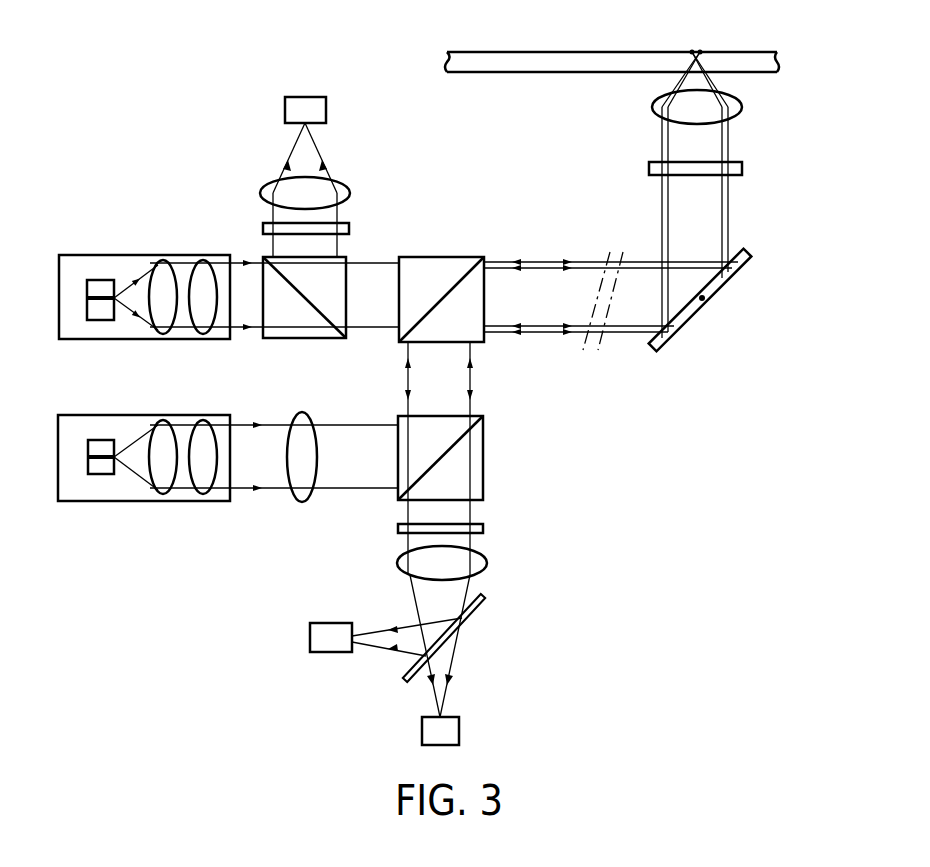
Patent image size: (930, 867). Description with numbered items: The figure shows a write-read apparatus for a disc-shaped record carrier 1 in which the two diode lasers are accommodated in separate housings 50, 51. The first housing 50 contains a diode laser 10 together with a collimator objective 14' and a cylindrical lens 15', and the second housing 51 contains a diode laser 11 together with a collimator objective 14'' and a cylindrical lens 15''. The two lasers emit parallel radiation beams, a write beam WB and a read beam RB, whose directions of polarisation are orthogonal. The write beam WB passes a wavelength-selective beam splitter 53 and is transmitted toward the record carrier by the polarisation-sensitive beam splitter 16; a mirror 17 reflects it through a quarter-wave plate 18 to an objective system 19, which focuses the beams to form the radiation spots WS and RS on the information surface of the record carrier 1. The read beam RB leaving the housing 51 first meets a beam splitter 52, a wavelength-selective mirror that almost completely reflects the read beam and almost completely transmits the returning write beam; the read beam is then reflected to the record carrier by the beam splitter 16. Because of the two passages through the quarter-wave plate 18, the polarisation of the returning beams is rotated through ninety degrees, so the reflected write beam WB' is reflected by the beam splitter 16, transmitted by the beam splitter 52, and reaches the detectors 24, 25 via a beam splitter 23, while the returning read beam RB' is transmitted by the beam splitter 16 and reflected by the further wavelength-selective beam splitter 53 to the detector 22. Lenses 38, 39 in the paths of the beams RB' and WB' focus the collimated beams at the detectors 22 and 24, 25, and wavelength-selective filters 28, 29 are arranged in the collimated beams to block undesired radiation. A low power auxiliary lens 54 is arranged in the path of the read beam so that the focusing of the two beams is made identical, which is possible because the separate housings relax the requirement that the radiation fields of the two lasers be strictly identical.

The record carrier 1 is at (766, 40).
The read radiation spot RS is at (691, 50).
The write radiation spot WS is at (701, 50).
The diode laser 10 is at (98, 299).
The diode laser 11 is at (98, 458).
The collimator objective 14' is at (165, 316).
The cylindrical lens 15' is at (210, 316).
The collimator objective 14'' is at (165, 440).
The cylindrical lens 15'' is at (212, 440).
The polarisation-sensitive beam splitter 16 is at (421, 272).
The mirror 17 is at (738, 267).
The λ/4 plate 18 is at (737, 172).
The objective system 19 is at (736, 112).
The detector 22 is at (320, 110).
The beam splitter 23 is at (484, 599).
The detector 24 is at (452, 730).
The detector 25 is at (322, 637).
The wavelength-selective filter 28 is at (349, 229).
The wavelength-selective filter 29 is at (485, 530).
The lens 38 is at (343, 197).
The lens 39 is at (482, 563).
The diode-laser housing 50 is at (82, 255).
The diode-laser housing 51 is at (89, 414).
The beam splitter 52 is at (485, 448).
The beam splitter 53 is at (287, 334).
The auxiliary lens 54 is at (302, 492).
The write beam WB is at (232, 274).
The reflected write beam WB' is at (477, 377).
The read beam RB is at (249, 482).
The reflected read beam RB' is at (335, 241).